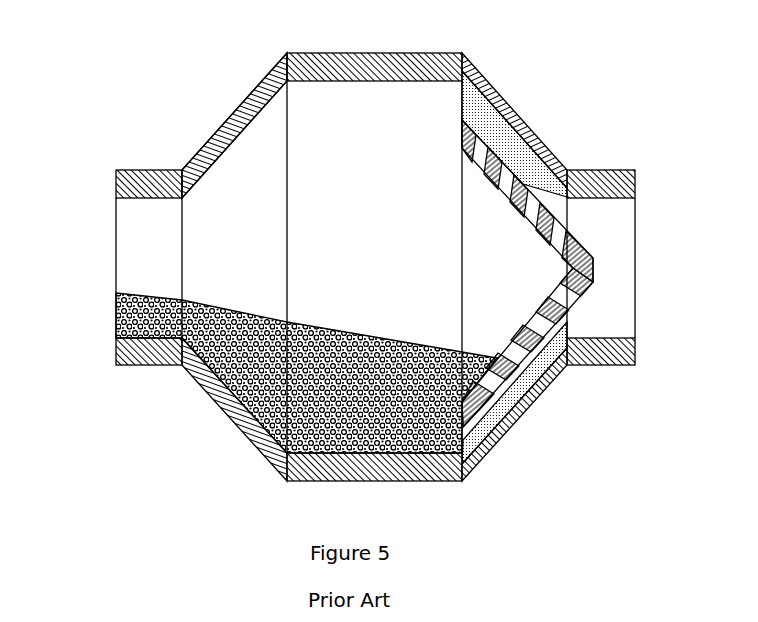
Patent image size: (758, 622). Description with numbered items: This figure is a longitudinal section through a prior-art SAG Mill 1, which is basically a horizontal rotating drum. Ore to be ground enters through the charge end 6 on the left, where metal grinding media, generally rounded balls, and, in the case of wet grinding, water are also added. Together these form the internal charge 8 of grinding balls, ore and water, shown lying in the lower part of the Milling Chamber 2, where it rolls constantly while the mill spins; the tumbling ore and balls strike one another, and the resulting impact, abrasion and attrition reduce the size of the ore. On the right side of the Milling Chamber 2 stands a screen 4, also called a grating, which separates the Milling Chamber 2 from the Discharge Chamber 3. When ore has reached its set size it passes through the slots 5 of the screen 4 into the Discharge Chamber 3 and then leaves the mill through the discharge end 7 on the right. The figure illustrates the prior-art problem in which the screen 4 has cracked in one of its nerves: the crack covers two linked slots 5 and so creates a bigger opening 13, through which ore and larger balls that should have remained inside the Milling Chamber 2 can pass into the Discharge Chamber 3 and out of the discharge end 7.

The SAG Mill 1 is at (375, 245).
The Milling Chamber 2 is at (224, 125).
The Discharge Chamber 3 is at (519, 267).
The bigger opening 13 is at (545, 267).
The slots 5 is at (492, 273).
The screen 4 is at (500, 273).
The charge end 6 is at (140, 238).
The discharge end 7 is at (613, 267).
The internal charge 8 is at (112, 303).